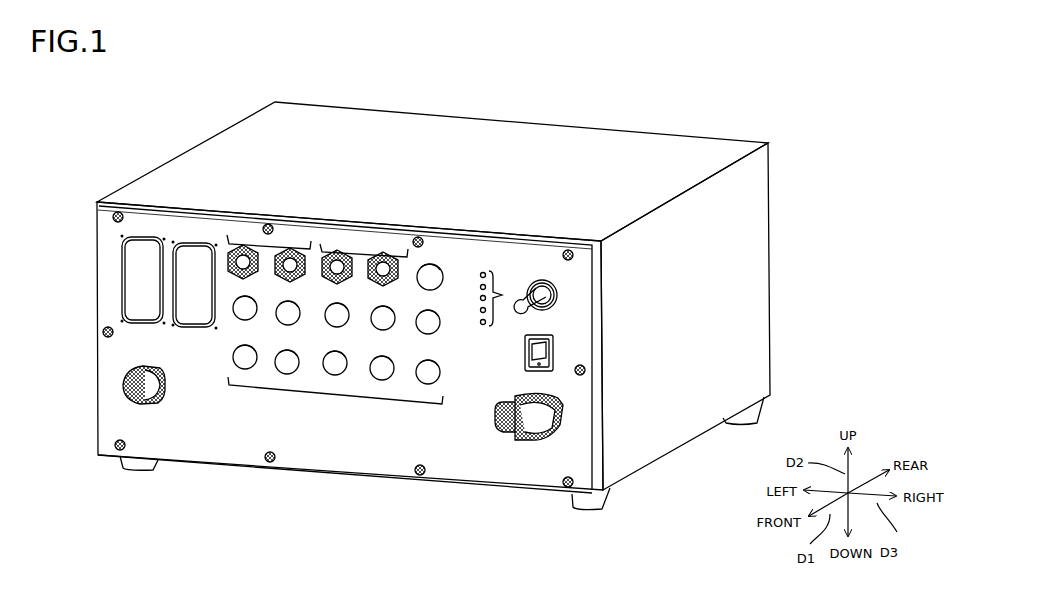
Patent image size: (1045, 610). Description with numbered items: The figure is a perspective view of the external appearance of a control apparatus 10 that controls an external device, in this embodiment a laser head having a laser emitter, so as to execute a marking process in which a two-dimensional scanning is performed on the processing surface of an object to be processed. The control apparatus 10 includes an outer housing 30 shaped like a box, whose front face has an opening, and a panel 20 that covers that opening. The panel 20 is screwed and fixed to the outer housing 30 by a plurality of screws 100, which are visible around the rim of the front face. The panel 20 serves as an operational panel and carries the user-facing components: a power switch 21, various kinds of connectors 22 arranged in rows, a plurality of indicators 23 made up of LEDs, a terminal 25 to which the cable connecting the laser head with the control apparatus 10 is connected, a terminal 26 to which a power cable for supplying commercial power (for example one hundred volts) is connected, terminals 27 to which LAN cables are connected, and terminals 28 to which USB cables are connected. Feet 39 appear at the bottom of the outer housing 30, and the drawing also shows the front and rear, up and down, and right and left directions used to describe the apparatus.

The control apparatus 10 is at (409, 303).
The panel 20 is at (98, 360).
The power switch 21 is at (556, 352).
The connectors 22 is at (337, 394).
The indicators 23 is at (502, 295).
The terminal 25 is at (123, 386).
The terminal 26 is at (517, 440).
The terminals 27 is at (365, 252).
The terminals 28 is at (283, 243).
The outer housing 30 is at (492, 120).
The feet 39 is at (137, 470).
The screws 100 is at (262, 466).